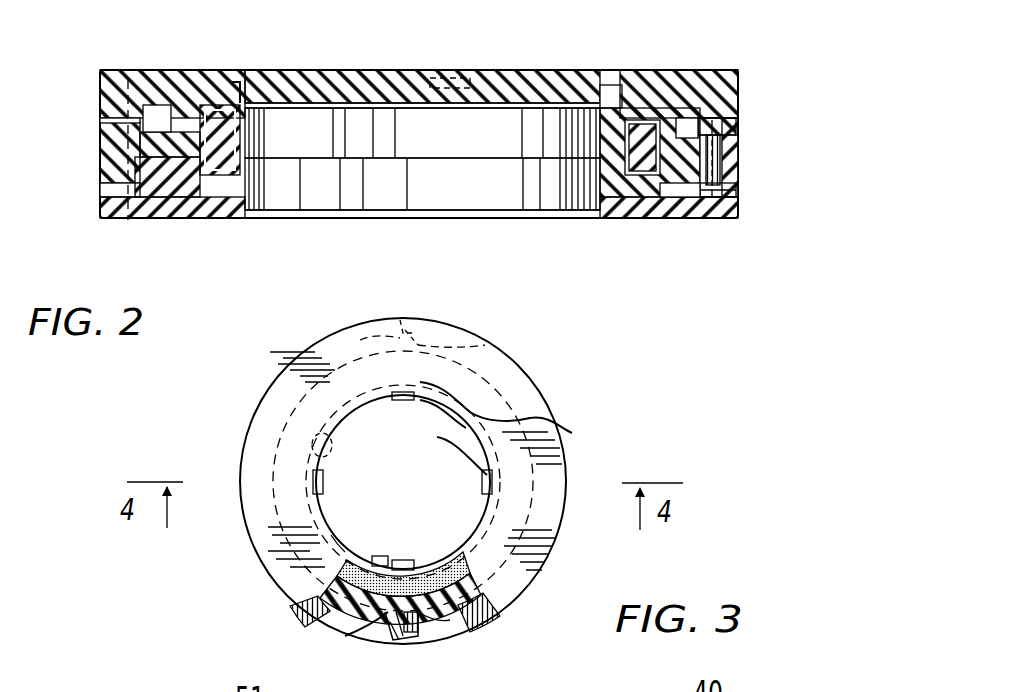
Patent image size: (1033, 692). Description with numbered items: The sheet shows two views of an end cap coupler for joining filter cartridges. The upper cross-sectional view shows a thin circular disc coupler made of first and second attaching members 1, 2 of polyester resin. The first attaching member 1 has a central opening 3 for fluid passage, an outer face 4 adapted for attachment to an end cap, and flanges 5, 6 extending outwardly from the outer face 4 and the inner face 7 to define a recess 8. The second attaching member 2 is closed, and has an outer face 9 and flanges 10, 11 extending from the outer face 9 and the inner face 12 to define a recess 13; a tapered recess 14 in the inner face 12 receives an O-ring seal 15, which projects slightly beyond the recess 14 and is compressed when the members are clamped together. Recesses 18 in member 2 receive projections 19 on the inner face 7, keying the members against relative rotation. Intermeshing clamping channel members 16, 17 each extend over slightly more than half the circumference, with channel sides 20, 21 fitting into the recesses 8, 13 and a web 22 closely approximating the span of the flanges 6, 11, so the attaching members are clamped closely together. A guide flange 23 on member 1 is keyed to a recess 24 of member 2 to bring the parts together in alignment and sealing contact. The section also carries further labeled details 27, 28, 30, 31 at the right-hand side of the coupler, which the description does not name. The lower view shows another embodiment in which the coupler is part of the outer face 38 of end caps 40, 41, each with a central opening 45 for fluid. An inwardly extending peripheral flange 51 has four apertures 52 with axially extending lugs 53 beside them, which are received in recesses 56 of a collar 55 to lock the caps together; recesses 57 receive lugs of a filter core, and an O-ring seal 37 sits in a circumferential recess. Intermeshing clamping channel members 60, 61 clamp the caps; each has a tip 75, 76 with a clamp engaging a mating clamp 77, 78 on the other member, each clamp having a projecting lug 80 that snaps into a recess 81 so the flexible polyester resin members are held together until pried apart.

In FIG. 2, the first attaching member 1 is at (286, 222).
In FIG. 2, the second attaching member 2 is at (308, 66).
In FIG. 2, the central opening 3 is at (500, 200).
In FIG. 2, the outer face 4 is at (610, 220).
In FIG. 2, the flange 5 is at (721, 168).
In FIG. 2, the flange 6 is at (736, 212).
In FIG. 2, the inner face 7 is at (505, 103).
In FIG. 2, the recess 8 is at (172, 202).
In FIG. 2, the outer face 9 is at (238, 82).
In FIG. 2, the flange 10 is at (106, 86).
In FIG. 2, the flange 11 is at (140, 146).
In FIG. 2, the inner face 12 is at (330, 112).
In FIG. 2, the recess 13 is at (667, 113).
In FIG. 2, the recess 14 is at (210, 124).
In FIG. 2, the O-ring seal 15 is at (620, 144).
In FIG. 2, the clamping channel member 16 is at (745, 127).
In FIG. 2, the clamping channel member 17 is at (96, 184).
In FIG. 2, the recesses 18 is at (437, 72).
In FIG. 2, the projections 19 is at (408, 108).
In FIG. 2, the channel side 20 is at (160, 122).
In FIG. 2, the channel side 21 is at (156, 192).
In FIG. 2, the web 22 is at (104, 131).
In FIG. 2, the guide flange 23 is at (265, 140).
In FIG. 2, the recess 24 is at (241, 85).
In FIG. 2, the bolt head 27 is at (726, 116).
In FIG. 2, the nut 28 is at (718, 199).
In FIG. 2, the bolt axis 30 is at (127, 80).
In FIG. 2, the washer 31 is at (710, 199).
In FIG. 3, the O-ring seal 37 is at (463, 562).
In FIG. 3, the outer face 38 is at (490, 407).
In FIG. 3, the end cap 40 is at (262, 396).
In FIG. 3, the end cap 41 is at (441, 553).
In FIG. 3, the central opening 45 is at (445, 494).
In FIG. 3, the inwardly extending peripheral flange 51 is at (345, 538).
In FIG. 3, the apertures 52 is at (488, 478).
In FIG. 3, the lugs 53 is at (423, 568).
In FIG. 3, the collar 55 is at (364, 560).
In FIG. 3, the recesses 56 is at (335, 438).
In FIG. 3, the recesses 57 is at (400, 399).
In FIG. 3, the clamping channel member 60 is at (310, 617).
In FIG. 3, the clamping channel member 61 is at (490, 629).
In FIG. 3, the tip 75 is at (370, 342).
In FIG. 3, the tip 76 is at (436, 626).
In FIG. 3, the mating clamp 77 is at (412, 326).
In FIG. 3, the mating clamp 78 is at (397, 638).
In FIG. 3, the projecting lug 80 is at (402, 320).
In FIG. 3, the recess 81 is at (485, 345).